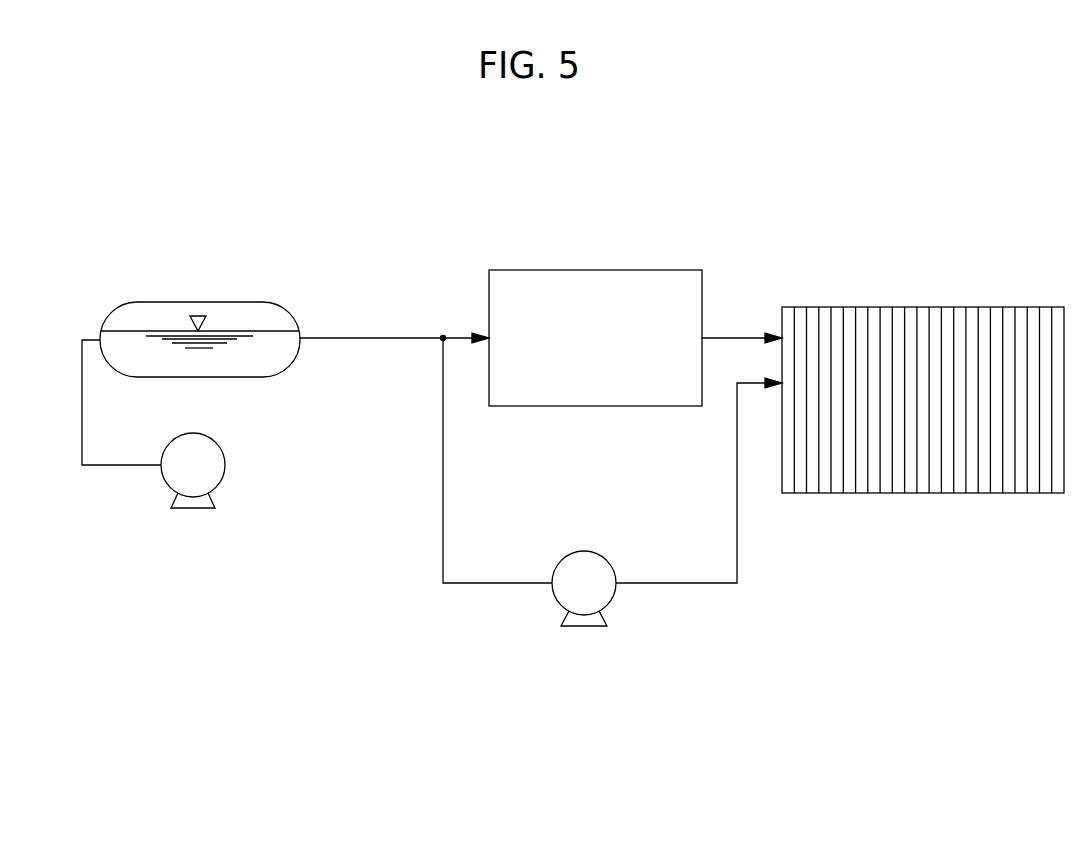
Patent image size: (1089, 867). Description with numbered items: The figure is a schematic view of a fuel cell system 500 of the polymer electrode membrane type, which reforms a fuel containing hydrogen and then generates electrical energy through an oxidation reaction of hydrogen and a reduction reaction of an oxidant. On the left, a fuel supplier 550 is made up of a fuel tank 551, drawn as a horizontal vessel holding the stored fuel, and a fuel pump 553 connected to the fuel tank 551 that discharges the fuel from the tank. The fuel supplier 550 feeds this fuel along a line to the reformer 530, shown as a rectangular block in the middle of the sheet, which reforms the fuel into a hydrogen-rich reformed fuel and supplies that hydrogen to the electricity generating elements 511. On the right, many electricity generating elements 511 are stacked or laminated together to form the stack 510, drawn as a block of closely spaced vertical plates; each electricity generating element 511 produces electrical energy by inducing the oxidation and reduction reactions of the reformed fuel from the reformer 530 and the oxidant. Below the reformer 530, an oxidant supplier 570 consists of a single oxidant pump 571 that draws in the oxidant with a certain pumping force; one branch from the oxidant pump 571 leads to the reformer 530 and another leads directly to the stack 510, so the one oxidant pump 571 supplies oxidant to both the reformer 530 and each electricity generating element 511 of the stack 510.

The fuel cell system 500 is at (578, 175).
The stack 510 is at (1000, 290).
The electricity generating element 511 is at (828, 490).
The reformer 530 is at (677, 269).
The fuel supplier 550 is at (150, 510).
The fuel tank 551 is at (253, 302).
The fuel pump 553 is at (212, 434).
The oxidant supplier 570 is at (633, 605).
The oxidant pump 571 is at (603, 553).